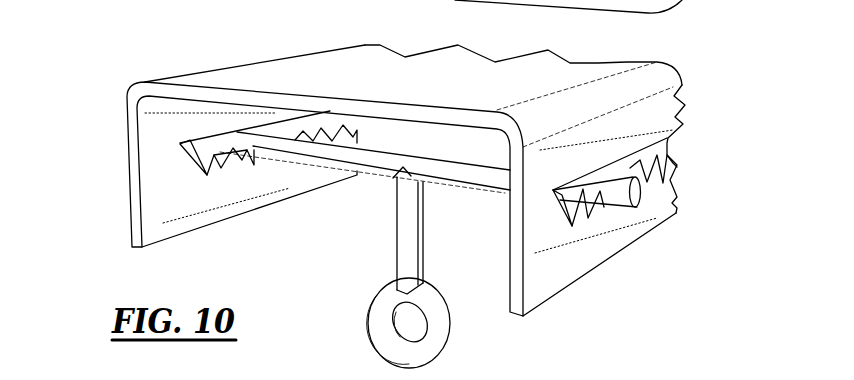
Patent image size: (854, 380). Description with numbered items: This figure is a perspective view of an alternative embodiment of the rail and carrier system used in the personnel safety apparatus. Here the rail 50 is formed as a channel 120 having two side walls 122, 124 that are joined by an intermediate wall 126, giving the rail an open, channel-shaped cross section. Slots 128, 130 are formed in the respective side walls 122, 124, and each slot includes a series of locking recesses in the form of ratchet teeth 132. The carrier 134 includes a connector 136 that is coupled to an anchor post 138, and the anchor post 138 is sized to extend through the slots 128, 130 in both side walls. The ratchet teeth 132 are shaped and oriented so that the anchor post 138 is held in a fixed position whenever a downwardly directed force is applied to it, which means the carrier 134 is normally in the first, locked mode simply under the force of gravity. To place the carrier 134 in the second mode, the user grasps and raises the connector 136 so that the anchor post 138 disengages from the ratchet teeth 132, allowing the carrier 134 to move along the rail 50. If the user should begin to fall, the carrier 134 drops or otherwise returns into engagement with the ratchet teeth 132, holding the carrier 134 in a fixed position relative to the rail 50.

The rail 50 is at (250, 44).
The channel 120 is at (571, 70).
The side wall 122 is at (130, 178).
The side wall 124 is at (580, 255).
The intermediate wall 126 is at (363, 67).
The slot 128 is at (193, 143).
The slot 130 is at (668, 143).
The ratchet teeth 132 is at (242, 170).
The carrier 134 is at (385, 174).
The connector 136 is at (448, 320).
The anchor post 138 is at (298, 153).